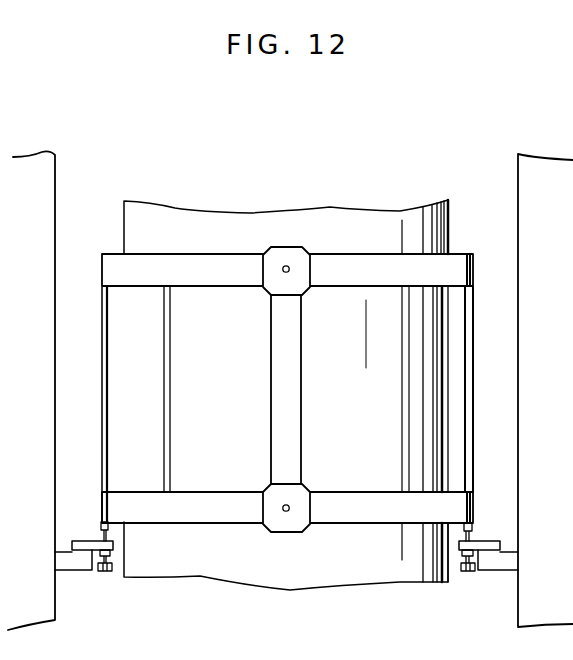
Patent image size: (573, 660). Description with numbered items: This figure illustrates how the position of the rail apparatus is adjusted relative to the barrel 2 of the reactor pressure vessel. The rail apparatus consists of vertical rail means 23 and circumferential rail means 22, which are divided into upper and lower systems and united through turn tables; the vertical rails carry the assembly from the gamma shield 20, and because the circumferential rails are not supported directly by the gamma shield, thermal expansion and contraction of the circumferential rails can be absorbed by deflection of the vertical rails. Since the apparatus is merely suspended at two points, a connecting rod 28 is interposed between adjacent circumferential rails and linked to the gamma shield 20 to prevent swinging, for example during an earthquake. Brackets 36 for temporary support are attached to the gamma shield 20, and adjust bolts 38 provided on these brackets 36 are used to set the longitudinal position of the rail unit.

The barrel 2 is at (357, 213).
The gamma shield 20 is at (55, 183).
The circumferential rail means 22 is at (337, 525).
The vertical rail means 23 is at (301, 388).
The connecting rod 28 is at (401, 448).
The brackets 36 is at (72, 572).
The adjust bolts 38 is at (108, 572).